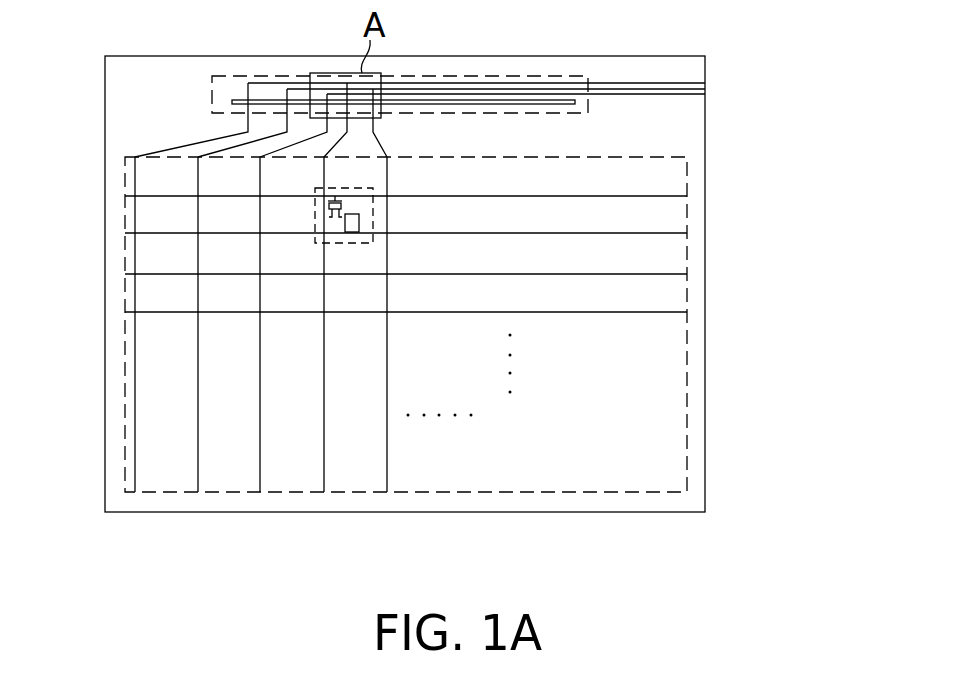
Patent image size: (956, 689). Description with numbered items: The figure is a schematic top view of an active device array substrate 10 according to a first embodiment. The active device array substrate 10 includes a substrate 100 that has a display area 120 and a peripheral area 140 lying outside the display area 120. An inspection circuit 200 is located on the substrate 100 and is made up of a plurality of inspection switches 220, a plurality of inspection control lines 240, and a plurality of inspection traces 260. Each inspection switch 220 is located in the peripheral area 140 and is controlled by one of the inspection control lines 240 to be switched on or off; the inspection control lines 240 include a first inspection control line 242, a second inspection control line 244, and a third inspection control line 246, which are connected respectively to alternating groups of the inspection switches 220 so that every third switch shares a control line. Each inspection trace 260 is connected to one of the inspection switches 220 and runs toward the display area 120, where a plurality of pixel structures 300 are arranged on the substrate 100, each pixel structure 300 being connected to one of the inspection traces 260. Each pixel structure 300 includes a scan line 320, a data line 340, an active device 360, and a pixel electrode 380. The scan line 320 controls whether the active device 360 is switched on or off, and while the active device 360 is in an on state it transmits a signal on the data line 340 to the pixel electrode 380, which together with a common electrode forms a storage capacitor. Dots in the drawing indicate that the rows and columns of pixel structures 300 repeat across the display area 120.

The active device array substrate 10 is at (818, 577).
The substrate 100 is at (705, 320).
The display area 120 is at (672, 398).
The peripheral area 140 is at (693, 452).
The inspection circuit 200 is at (527, 76).
The inspection switch 220 is at (575, 102).
The inspection control lines 240 is at (552, 79).
The first inspection control line 242 is at (705, 83).
The second inspection control line 244 is at (705, 88).
The third inspection control line 246 is at (705, 94).
The inspection trace 260 is at (232, 102).
The pixel structure 300 is at (373, 247).
The scan line 320 is at (350, 195).
The data line 340 is at (329, 214).
The active device 360 is at (345, 205).
The pixel electrode 380 is at (359, 222).